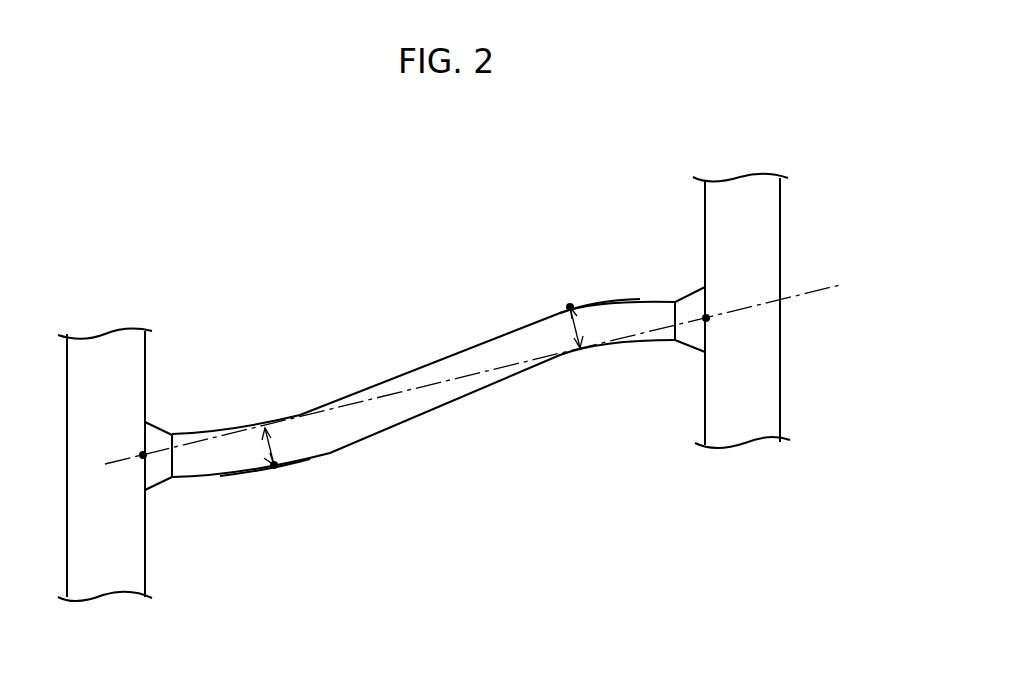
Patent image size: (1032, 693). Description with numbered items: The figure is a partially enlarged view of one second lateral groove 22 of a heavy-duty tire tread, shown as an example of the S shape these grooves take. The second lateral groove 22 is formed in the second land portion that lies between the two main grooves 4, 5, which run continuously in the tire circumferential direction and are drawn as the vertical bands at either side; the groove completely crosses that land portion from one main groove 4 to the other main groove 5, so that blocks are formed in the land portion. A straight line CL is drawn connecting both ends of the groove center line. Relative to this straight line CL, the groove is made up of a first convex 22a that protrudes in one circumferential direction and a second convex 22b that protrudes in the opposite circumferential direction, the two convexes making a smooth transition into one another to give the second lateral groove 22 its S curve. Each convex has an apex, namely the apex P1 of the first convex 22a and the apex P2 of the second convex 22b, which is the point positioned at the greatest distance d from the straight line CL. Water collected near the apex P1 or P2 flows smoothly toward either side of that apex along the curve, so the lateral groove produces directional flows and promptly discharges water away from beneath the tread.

The main groove 4 is at (104, 362).
The main groove 5 is at (741, 225).
The second lateral groove 22 is at (400, 287).
The first convex 22a is at (582, 302).
The second convex 22b is at (298, 472).
The apex P1 is at (570, 304).
The apex P2 is at (275, 468).
The distance d is at (269, 447).
The straight line CL is at (805, 290).